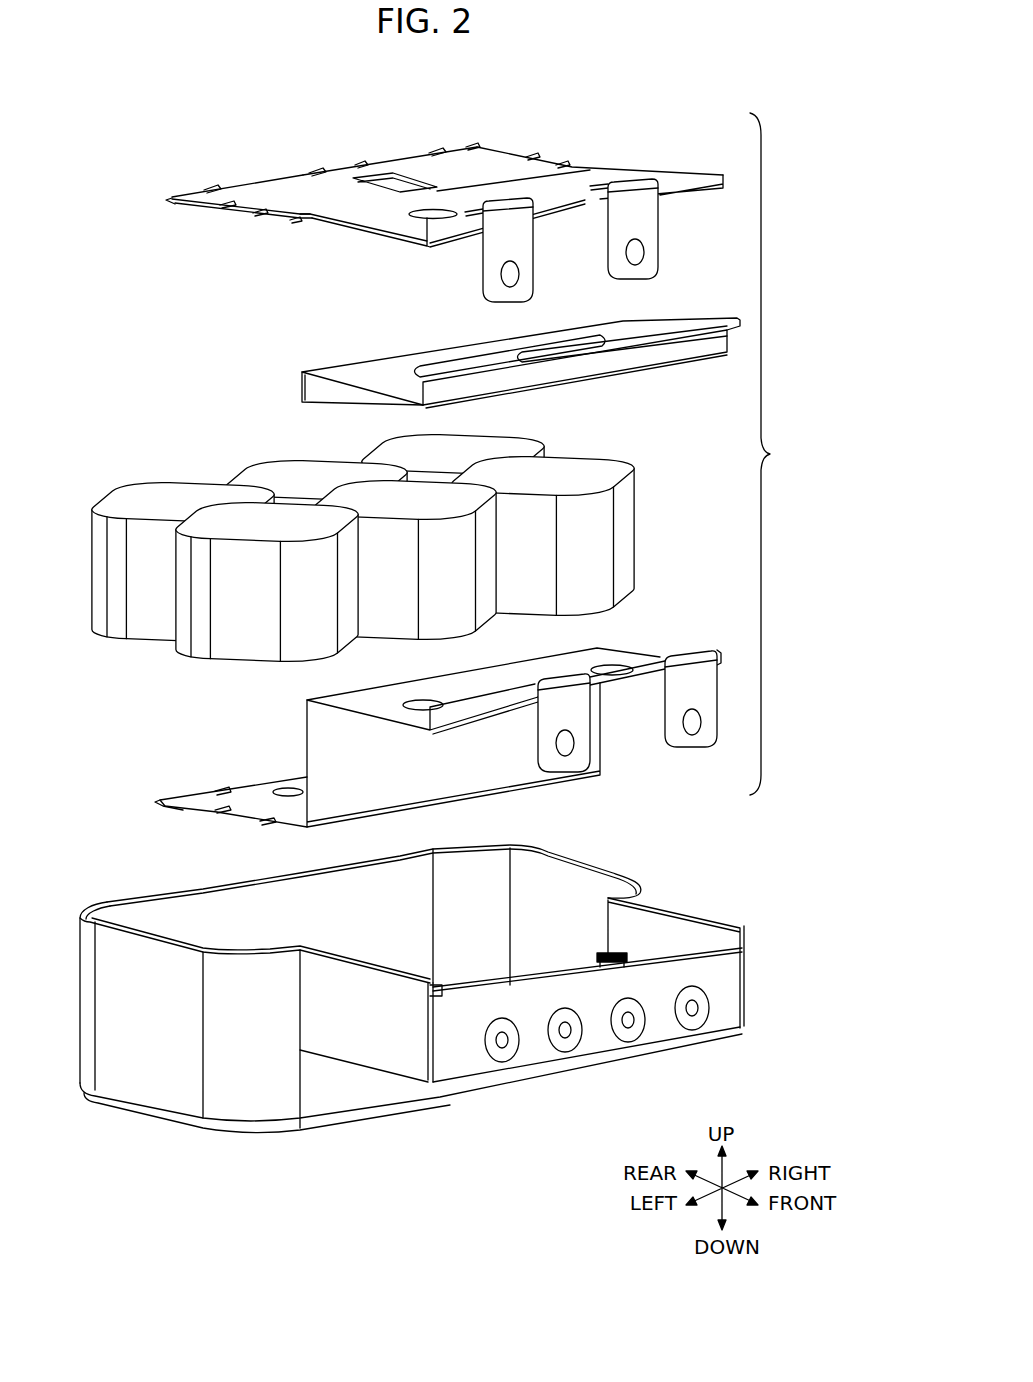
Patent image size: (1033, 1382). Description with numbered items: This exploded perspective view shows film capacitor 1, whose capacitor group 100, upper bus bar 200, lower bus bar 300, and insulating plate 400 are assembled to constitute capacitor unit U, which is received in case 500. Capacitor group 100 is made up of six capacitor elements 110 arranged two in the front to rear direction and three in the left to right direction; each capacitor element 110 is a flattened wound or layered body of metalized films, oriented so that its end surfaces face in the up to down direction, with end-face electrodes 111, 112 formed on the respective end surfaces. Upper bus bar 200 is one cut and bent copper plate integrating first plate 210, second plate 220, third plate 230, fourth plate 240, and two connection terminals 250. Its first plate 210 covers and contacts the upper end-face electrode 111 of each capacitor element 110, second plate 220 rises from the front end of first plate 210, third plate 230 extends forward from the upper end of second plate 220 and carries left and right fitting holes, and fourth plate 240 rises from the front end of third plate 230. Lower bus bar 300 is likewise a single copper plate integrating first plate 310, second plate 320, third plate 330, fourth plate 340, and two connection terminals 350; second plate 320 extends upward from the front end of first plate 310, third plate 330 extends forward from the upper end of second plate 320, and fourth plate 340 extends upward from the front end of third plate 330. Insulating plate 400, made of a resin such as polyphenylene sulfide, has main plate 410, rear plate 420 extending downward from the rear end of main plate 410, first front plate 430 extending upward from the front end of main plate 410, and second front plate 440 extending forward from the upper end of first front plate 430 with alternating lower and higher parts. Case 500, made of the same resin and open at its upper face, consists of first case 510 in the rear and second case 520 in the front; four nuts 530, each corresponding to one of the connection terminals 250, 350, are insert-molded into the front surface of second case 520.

The film capacitor 1 is at (143, 150).
The capacitor unit U is at (779, 454).
The capacitor group 100 is at (250, 450).
The capacitor element 110 is at (172, 485).
The end-face electrode 111 is at (118, 497).
The end-face electrode 112 is at (127, 640).
The upper bus bar 200 is at (402, 150).
The first plate 210 is at (290, 190).
The second plate 220 is at (305, 222).
The third plate 230 is at (603, 167).
The fourth plate 240 is at (690, 190).
The connection terminal 250 is at (520, 240).
The lower bus bar 300 is at (210, 780).
The first plate 310 is at (263, 800).
The second plate 320 is at (520, 778).
The third plate 330 is at (620, 652).
The fourth plate 340 is at (615, 690).
The connection terminal 350 is at (575, 762).
The insulating plate 400 is at (345, 365).
The main plate 410 is at (412, 358).
The rear plate 420 is at (320, 390).
The first front plate 430 is at (605, 362).
The second front plate 440 is at (487, 360).
The case 500 is at (683, 884).
The first case 510 is at (145, 895).
The second case 520 is at (700, 918).
The nut 530 is at (602, 1125).